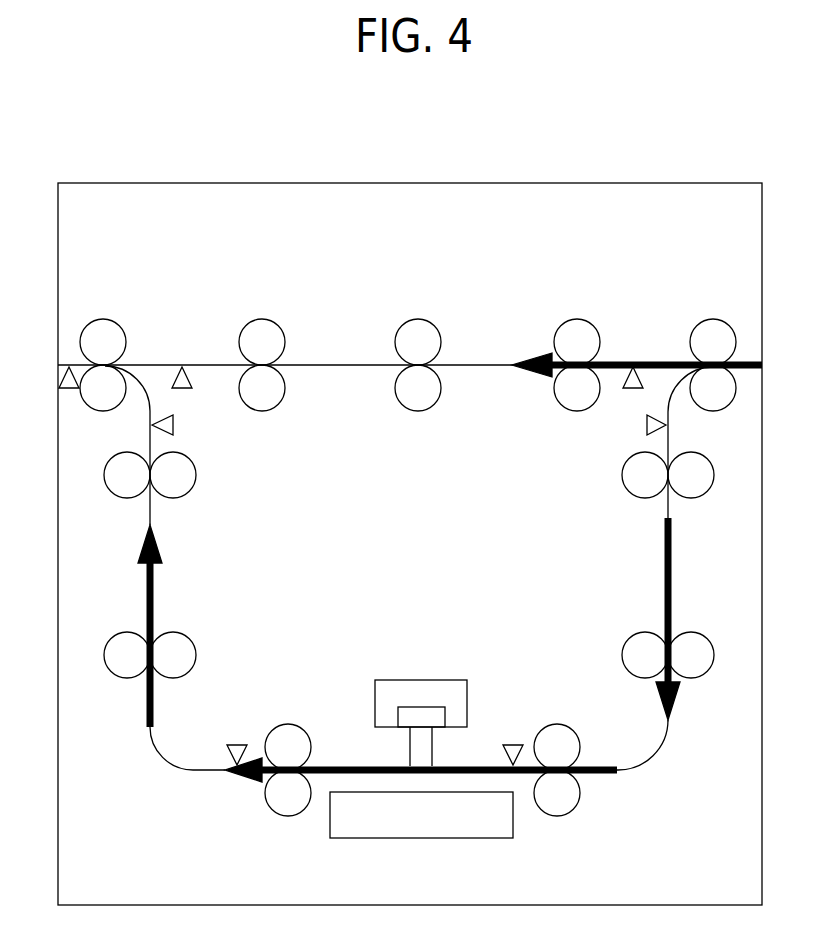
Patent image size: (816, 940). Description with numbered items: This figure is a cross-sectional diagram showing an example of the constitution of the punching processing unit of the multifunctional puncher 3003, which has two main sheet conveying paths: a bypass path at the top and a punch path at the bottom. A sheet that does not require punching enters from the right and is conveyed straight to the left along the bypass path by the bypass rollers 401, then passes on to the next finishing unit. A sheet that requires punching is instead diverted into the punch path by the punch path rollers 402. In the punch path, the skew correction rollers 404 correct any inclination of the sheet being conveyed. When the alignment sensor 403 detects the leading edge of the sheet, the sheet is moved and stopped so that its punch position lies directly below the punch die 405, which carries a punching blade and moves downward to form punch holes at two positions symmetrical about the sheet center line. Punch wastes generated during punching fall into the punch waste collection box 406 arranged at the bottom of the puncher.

The multifunctional puncher 3003 is at (525, 192).
The bypass rollers 401 is at (577, 328).
The punch path rollers 402 is at (691, 645).
The alignment sensor 403 is at (237, 742).
The skew correction rollers 404 is at (288, 805).
The punch die 405 is at (395, 680).
The punch waste collection box 406 is at (380, 840).